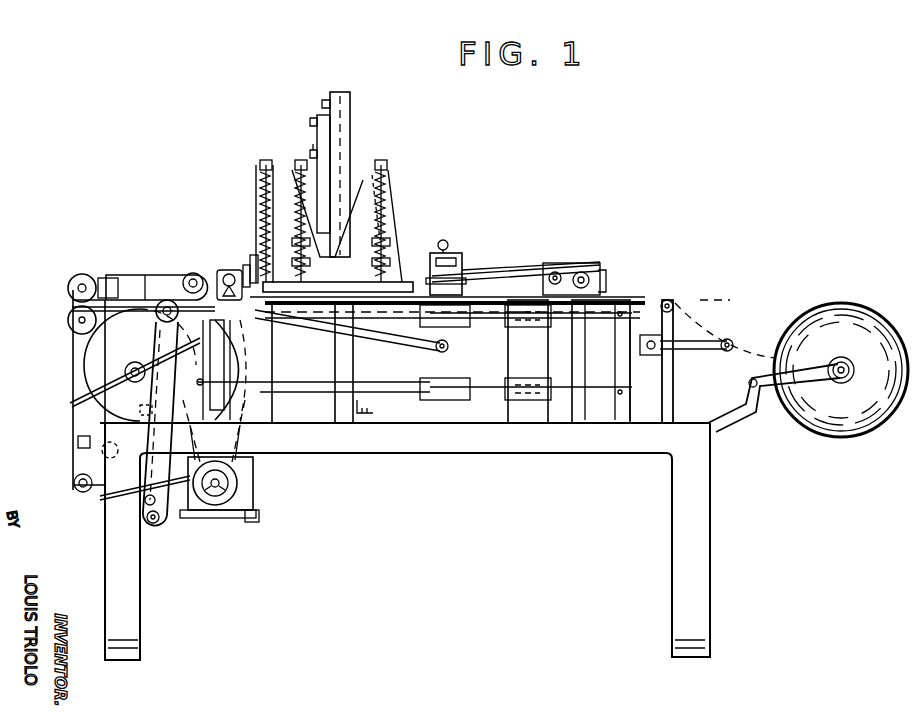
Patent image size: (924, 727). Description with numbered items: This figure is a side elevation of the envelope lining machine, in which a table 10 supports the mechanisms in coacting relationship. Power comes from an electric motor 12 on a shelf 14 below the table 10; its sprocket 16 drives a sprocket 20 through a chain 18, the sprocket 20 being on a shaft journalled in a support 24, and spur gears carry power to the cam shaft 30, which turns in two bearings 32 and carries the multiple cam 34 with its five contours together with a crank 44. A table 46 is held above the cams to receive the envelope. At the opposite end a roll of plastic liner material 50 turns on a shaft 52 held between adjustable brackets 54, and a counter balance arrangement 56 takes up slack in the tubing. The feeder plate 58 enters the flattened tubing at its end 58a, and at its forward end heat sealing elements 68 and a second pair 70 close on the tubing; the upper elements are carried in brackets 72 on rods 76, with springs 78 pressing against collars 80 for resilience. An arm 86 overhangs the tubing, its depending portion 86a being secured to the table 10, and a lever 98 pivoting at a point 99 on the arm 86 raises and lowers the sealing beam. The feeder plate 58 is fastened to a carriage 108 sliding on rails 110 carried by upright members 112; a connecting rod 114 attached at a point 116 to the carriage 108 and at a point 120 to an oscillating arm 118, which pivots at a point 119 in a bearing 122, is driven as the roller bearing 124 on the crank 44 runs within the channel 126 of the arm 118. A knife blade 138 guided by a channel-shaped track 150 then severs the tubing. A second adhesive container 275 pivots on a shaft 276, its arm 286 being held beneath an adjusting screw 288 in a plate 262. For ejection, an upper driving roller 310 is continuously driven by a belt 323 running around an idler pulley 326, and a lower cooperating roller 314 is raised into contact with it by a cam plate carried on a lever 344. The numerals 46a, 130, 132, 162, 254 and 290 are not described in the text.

The table 10 is at (612, 440).
The electric motor 12 is at (238, 486).
The shelf 14 is at (215, 520).
The sprocket 16 is at (245, 518).
The chain 18 is at (238, 463).
The sprocket 20 is at (200, 425).
The support 24 is at (200, 386).
The cam shaft 30 is at (78, 403).
The bearings 32 is at (139, 402).
The multiple cam 34 is at (76, 385).
The crank 44 is at (135, 363).
The table 46 is at (140, 275).
The guide bar 46a is at (72, 308).
The roll of plastic liner material 50 is at (828, 304).
The shaft 52 is at (838, 376).
The adjustable brackets 54 is at (758, 402).
The counter balance arrangement 56 is at (695, 358).
The feeder plate 58 is at (490, 272).
The end of feeder plate 58a is at (626, 298).
The heat sealing elements 68 is at (340, 285).
The heat sealing elements 70 is at (272, 338).
The brackets 72 is at (262, 173).
The rods 76 is at (388, 210).
The springs 78 is at (376, 182).
The collars 80 is at (390, 244).
The arm 86 is at (349, 118).
The depending portion 86a is at (375, 410).
The lever 98 is at (317, 136).
The pivot point 99 is at (312, 156).
The carriage 108 is at (470, 330).
The rails 110 is at (604, 326).
The upright members 112 is at (280, 412).
The connecting rod 114 is at (370, 338).
The attachment point 116 is at (436, 349).
The oscillating arm 118 is at (148, 486).
The pivot 119 is at (145, 503).
The attachment point 120 is at (170, 299).
The bearing 122 is at (160, 524).
The roller bearing 124 is at (165, 300).
The channel 126 is at (113, 452).
The bracket 130 is at (100, 280).
The housing 132 is at (122, 275).
The knife blade 138 is at (248, 262).
The channel-shaped track 150 is at (256, 240).
The bracket 162 is at (228, 270).
The rail 254 is at (475, 412).
The plate 262 is at (453, 254).
The second adhesive container 275 is at (602, 278).
The shaft 276 is at (548, 280).
The arm 286 is at (525, 263).
The adjusting screw 288 is at (446, 240).
The block 290 is at (545, 265).
The upper driving roller 310 is at (70, 280).
The lower cooperating roller 314 is at (68, 325).
The belt 323 is at (76, 442).
The idler pulley 326 is at (76, 479).
The lever 344 is at (73, 423).